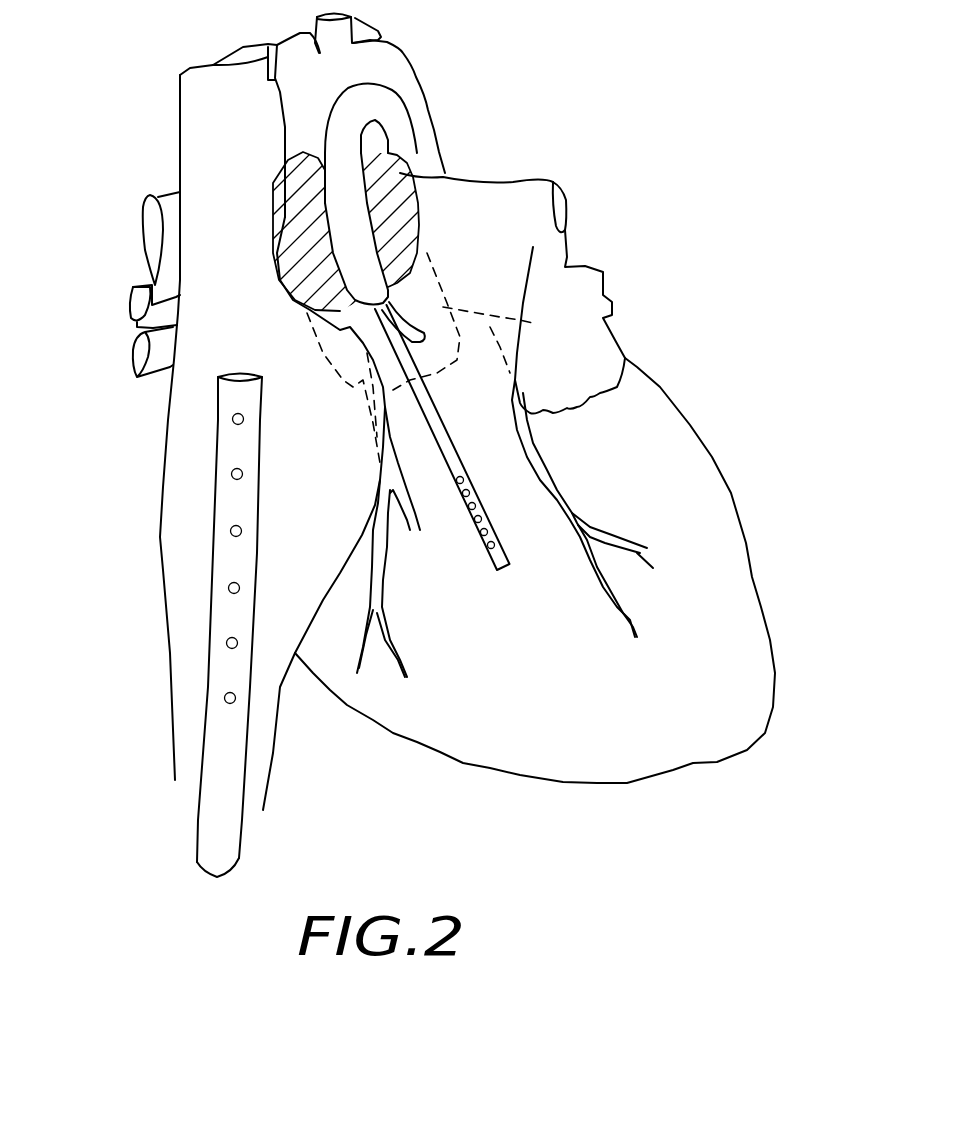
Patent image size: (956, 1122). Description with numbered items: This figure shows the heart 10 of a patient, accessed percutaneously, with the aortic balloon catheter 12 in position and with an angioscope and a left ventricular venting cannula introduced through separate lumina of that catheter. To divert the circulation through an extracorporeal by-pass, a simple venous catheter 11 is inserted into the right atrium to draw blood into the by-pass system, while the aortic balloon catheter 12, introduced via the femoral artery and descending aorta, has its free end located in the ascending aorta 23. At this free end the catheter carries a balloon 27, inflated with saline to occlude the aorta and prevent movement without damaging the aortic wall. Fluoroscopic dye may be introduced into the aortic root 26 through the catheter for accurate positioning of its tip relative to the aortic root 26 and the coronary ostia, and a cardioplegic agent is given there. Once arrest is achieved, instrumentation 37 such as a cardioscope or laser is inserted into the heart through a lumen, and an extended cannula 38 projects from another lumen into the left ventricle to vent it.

The heart 10 is at (615, 793).
The venous catheter 11 is at (218, 789).
The aortic balloon catheter 12 is at (398, 102).
The ascending aorta 23 is at (300, 130).
The aortic root 26 is at (330, 350).
The balloon 27 is at (388, 213).
The instrumentation 37 is at (414, 323).
The extended cannula 38 is at (493, 517).